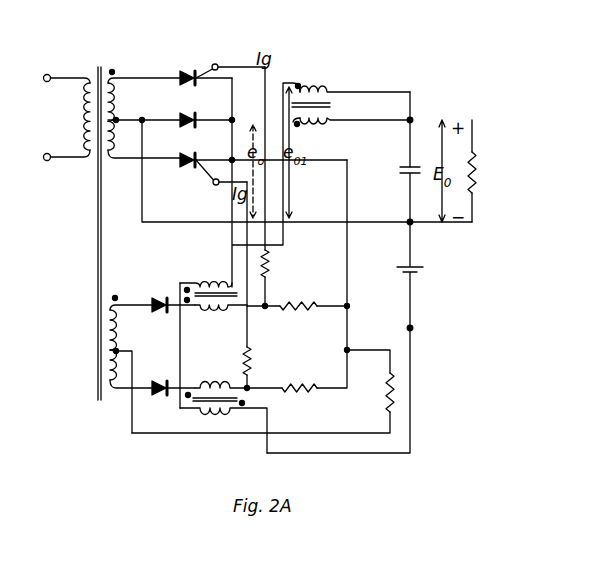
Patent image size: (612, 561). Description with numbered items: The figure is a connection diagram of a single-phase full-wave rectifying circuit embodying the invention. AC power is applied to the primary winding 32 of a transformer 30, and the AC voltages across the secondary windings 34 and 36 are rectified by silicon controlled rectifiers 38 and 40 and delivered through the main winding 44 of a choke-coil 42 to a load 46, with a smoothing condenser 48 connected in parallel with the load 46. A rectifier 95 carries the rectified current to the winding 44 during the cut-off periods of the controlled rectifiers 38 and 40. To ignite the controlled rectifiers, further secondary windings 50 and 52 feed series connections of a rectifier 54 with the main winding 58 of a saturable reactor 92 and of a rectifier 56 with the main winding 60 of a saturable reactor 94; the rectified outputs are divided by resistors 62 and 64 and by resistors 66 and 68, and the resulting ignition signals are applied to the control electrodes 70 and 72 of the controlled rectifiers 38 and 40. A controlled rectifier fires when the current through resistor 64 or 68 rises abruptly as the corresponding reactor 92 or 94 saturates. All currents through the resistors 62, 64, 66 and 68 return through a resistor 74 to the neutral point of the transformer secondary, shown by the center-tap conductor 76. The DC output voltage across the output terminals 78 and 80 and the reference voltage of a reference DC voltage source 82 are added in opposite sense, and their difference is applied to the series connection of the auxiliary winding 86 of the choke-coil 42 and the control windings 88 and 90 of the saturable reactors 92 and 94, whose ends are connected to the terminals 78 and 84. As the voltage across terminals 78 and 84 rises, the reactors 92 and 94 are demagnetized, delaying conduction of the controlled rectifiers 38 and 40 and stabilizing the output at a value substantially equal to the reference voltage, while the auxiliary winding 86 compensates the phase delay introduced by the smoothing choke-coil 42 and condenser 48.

The transformer 30 is at (93, 240).
The primary winding 32 is at (74, 113).
The secondary winding 34 is at (144, 96).
The secondary winding 36 is at (144, 138).
The silicon controlled rectifier 38 is at (190, 69).
The silicon controlled rectifier 40 is at (186, 168).
The choke-coil 42 is at (355, 104).
The main winding of the choke-coil 44 is at (318, 124).
The load 46 is at (478, 178).
The smoothing condenser 48 is at (403, 166).
The secondary winding 50 is at (119, 320).
The secondary winding 52 is at (120, 378).
The rectifier 54 is at (157, 297).
The rectifier 56 is at (158, 397).
The main winding of saturable reactor 58 is at (205, 312).
The main winding of saturable reactor 60 is at (218, 383).
The resistor 62 is at (310, 298).
The resistor 64 is at (271, 260).
The resistor 66 is at (308, 384).
The resistor 68 is at (255, 356).
The control electrode 70 is at (218, 64).
The control electrode 72 is at (216, 185).
The resistor 74 is at (386, 381).
The center tap conductor 76 is at (140, 352).
The output terminal 78 is at (414, 118).
The output terminal 80 is at (418, 226).
The reference DC voltage source 82 is at (369, 337).
The terminal 84 is at (414, 328).
The auxiliary winding of the choke-coil 86 is at (304, 84).
The auxiliary winding of saturable reactor 88 is at (207, 280).
The auxiliary winding of saturable reactor 90 is at (215, 418).
The saturable reactor 92 is at (238, 311).
The saturable reactor 94 is at (282, 408).
The rectifier 95 is at (190, 113).